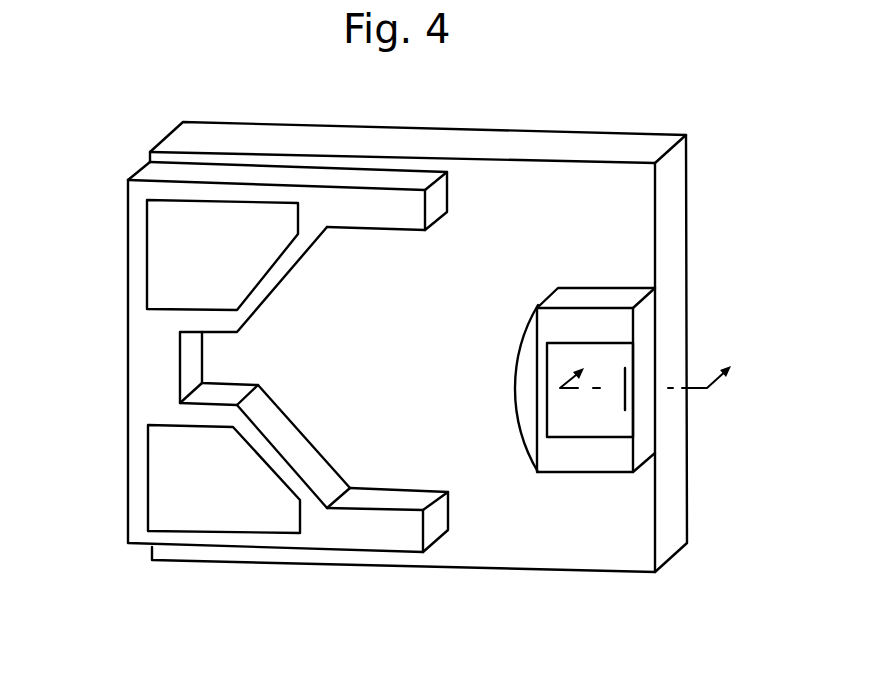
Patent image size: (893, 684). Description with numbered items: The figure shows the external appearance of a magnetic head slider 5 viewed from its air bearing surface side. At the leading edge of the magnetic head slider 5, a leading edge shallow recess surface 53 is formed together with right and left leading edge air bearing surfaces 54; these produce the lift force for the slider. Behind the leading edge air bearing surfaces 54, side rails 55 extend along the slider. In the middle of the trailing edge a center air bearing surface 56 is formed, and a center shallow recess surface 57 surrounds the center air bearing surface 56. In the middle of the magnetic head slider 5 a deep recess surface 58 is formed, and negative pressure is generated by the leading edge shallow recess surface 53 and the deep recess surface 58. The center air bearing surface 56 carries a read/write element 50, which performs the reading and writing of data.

The magnetic head slider 5 is at (530, 131).
The read/write element 50 is at (628, 382).
The leading edge shallow recess surface 53 is at (140, 377).
The leading edge air bearing surfaces 54 is at (163, 247).
The side rails 55 is at (383, 205).
The center air bearing surface 56 is at (600, 418).
The center shallow recess surface 57 is at (528, 413).
The deep recess surface 58 is at (404, 364).